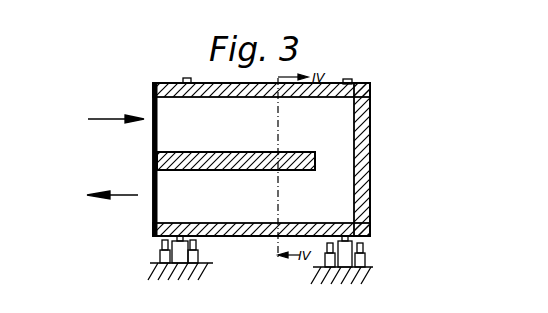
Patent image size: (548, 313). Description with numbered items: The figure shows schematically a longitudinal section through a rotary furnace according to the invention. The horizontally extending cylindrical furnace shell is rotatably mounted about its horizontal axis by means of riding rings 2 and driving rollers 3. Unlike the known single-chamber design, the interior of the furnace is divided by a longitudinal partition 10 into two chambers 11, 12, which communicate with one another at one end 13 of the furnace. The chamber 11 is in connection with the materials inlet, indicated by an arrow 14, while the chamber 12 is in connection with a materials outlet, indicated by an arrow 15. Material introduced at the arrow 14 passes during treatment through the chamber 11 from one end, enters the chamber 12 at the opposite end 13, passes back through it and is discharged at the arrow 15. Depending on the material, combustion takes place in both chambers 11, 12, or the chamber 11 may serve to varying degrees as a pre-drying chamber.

The riding rings 2 is at (352, 80).
The driving rollers 3 is at (340, 268).
The longitudinal partition 10 is at (156, 161).
The chamber 11 is at (250, 128).
The chamber 12 is at (247, 203).
The end of the furnace 13 is at (360, 151).
The arrow 14 is at (113, 118).
The arrow 15 is at (127, 197).